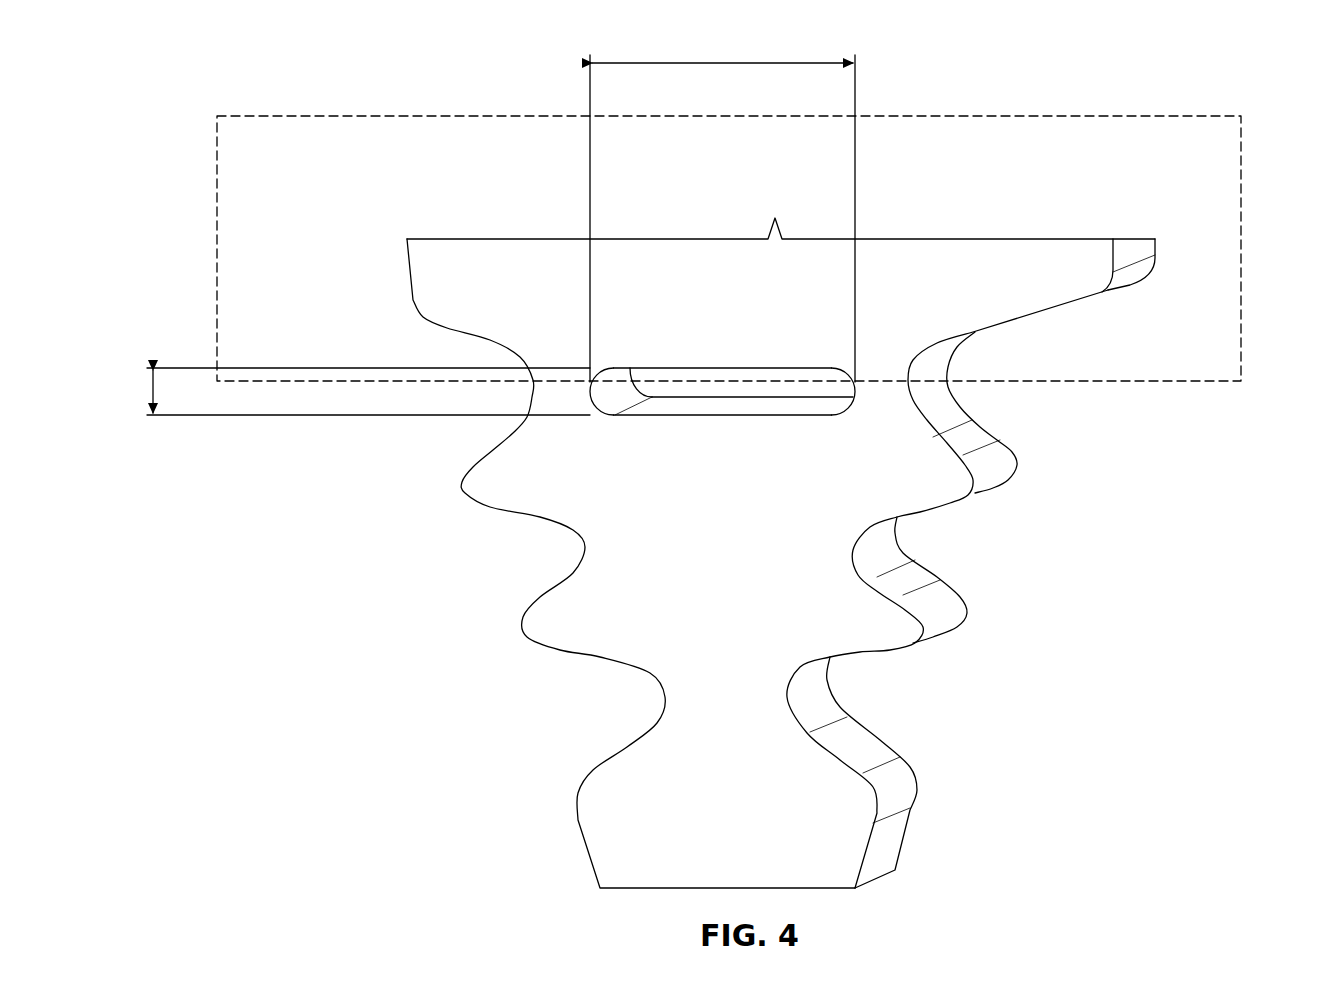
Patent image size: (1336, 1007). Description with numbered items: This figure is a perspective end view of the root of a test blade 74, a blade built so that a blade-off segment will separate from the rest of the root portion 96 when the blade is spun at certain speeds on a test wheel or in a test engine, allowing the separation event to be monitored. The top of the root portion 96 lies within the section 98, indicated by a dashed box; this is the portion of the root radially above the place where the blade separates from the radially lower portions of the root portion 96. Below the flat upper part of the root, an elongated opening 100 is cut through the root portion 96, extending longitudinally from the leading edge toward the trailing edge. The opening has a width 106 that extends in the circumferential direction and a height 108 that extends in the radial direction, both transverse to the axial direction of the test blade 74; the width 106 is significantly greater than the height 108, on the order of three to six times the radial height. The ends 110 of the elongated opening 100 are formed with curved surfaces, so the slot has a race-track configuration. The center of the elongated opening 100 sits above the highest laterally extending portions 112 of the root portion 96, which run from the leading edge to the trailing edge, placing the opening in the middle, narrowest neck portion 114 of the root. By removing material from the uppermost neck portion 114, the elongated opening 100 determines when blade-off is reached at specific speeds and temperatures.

The test blade 74 is at (702, 459).
The root portion 96 is at (766, 553).
The section 98 is at (1242, 300).
The elongated opening 100 is at (733, 405).
The width 106 is at (723, 62).
The height 108 is at (152, 392).
The ends 110 is at (583, 400).
The laterally extending portions 112 is at (462, 483).
The neck portion 114 is at (552, 400).